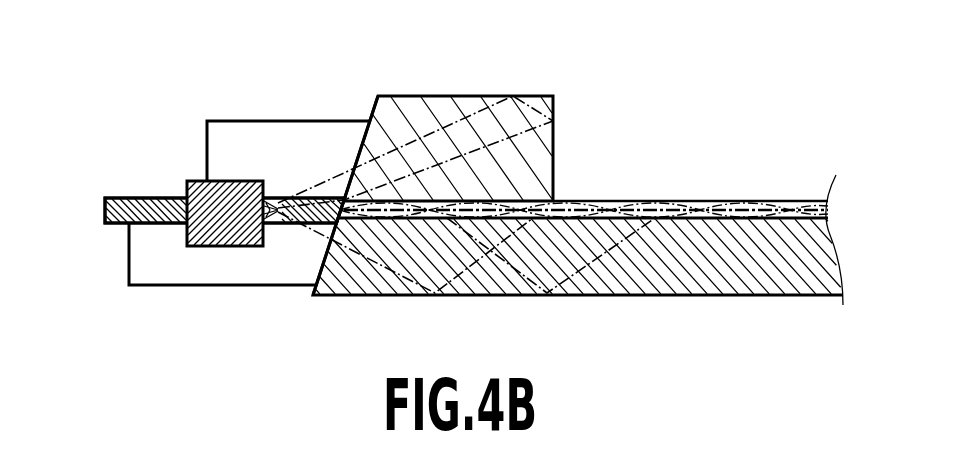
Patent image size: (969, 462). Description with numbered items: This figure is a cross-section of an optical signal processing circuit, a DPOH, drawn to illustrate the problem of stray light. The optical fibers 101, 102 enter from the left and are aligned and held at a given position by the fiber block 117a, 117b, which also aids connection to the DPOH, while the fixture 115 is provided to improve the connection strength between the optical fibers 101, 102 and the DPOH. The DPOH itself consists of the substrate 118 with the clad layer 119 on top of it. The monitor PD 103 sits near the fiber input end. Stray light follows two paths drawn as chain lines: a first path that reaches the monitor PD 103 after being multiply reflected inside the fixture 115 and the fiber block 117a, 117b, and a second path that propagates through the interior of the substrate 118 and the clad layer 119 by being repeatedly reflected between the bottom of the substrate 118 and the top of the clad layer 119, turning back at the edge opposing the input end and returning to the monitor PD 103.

The optical fiber 101 is at (128, 197).
The optical fiber 102 is at (225, 210).
The monitor PD 103 is at (198, 181).
The fixture 115 is at (465, 95).
The upper electrode wiring 117a is at (287, 120).
The lower electrode wiring 117b is at (218, 287).
The substrate 118 is at (585, 295).
The clad layer 119 is at (713, 200).